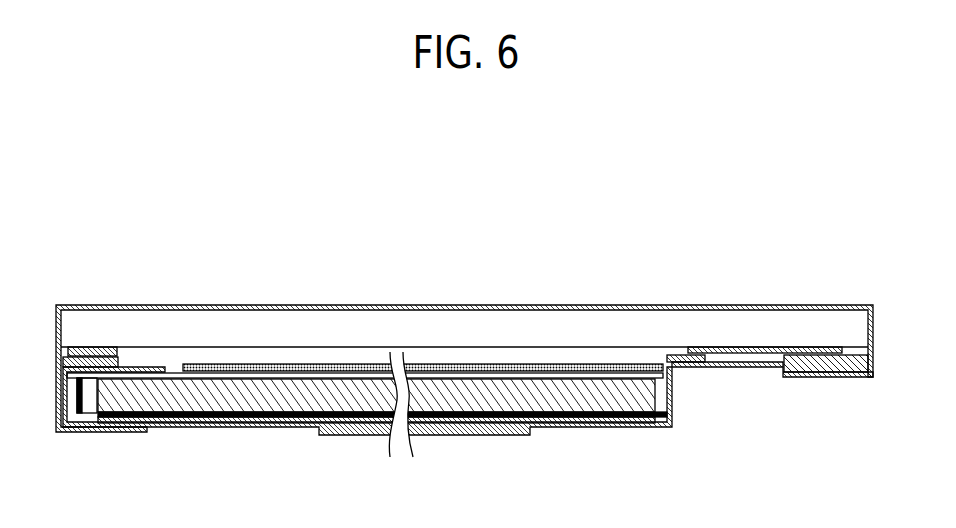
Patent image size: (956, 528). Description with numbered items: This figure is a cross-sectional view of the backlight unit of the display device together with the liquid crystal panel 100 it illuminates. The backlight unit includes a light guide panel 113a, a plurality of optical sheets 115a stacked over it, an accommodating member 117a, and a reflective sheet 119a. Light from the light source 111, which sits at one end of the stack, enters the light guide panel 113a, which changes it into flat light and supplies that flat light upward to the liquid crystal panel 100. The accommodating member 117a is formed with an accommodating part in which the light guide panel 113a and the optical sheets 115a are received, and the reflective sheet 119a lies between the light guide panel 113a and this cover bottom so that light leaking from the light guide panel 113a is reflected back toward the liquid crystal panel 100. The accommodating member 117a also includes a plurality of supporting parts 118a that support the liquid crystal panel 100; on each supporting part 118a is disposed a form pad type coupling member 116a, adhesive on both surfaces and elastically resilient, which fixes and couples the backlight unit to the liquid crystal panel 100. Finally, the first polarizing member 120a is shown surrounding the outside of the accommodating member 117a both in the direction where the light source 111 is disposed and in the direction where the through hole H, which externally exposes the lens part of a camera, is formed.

The liquid crystal panel 100 is at (313, 325).
The light source 111 is at (88, 410).
The light guide panel 113a is at (578, 400).
The optical sheets 115a is at (490, 367).
The coupling member 116a is at (90, 347).
The accommodating member 117a is at (263, 423).
The supporting part 118a is at (118, 360).
The reflective sheet 119a is at (202, 418).
The first polarizing member 120a is at (122, 432).
The through hole H is at (745, 360).